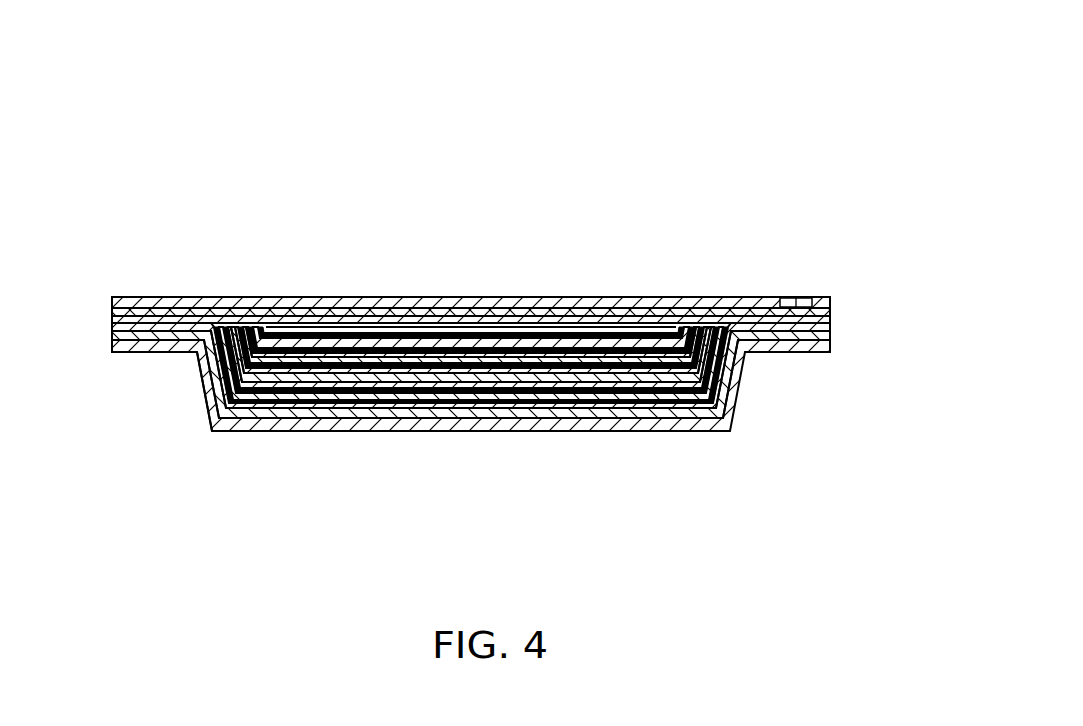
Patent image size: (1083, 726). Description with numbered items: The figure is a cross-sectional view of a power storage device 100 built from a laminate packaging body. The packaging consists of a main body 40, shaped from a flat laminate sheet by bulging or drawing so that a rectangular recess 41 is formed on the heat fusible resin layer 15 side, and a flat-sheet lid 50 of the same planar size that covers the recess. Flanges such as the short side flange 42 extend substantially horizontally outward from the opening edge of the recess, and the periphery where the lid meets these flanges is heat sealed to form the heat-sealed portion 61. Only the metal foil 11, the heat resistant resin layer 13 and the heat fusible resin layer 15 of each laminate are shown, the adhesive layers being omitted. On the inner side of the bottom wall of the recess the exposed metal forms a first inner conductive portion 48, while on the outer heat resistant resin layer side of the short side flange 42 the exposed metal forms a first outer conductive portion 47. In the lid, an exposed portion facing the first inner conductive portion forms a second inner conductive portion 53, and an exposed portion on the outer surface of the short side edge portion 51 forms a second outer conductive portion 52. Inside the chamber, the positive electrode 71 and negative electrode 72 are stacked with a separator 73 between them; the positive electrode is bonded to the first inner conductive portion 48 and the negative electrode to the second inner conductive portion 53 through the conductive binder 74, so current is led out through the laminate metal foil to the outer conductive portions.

The power storage device 100 is at (711, 98).
The lid 50 is at (698, 297).
The heat resistant resin layer 13 is at (831, 301).
The metal foil 11 is at (831, 311).
The heat fusible resin layer 15 is at (831, 320).
The second outer conductive portion 52 is at (792, 300).
The short side edge portion 51 is at (826, 297).
The heat-sealed portion 61 is at (197, 297).
The main body 40 is at (652, 431).
The first outer conductive portion 47 is at (148, 347).
The short side flange 42 is at (168, 354).
The recess 41 is at (270, 431).
The first inner conductive portion 48 is at (500, 406).
The positive electrode 71 is at (375, 402).
The conductive binder 74 is at (560, 402).
The separator 73 is at (573, 362).
The second inner conductive portion 53 is at (493, 346).
The negative electrode 72 is at (318, 335).